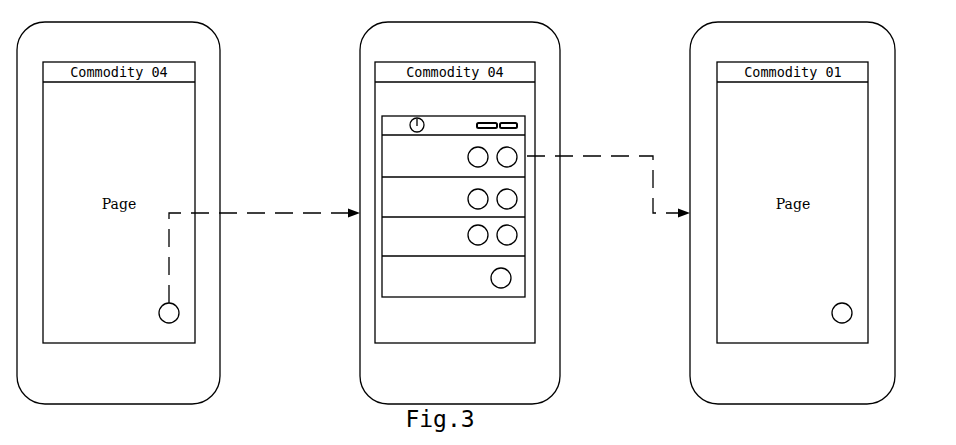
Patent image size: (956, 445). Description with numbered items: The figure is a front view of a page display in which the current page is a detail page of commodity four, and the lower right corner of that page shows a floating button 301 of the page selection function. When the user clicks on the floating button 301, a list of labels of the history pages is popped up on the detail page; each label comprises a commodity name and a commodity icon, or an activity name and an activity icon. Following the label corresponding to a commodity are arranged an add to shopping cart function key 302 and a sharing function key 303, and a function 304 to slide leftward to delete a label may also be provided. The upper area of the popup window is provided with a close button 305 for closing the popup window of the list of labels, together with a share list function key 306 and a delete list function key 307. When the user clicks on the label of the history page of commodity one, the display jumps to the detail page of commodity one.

The floating button 301 is at (179, 310).
The add to shopping cart function key 302 is at (518, 197).
The sharing function key 303 is at (487, 188).
The slide leftward to delete label function 304 is at (477, 296).
The close button 305 is at (422, 117).
The share list function key 306 is at (488, 119).
The delete list function key 307 is at (510, 121).